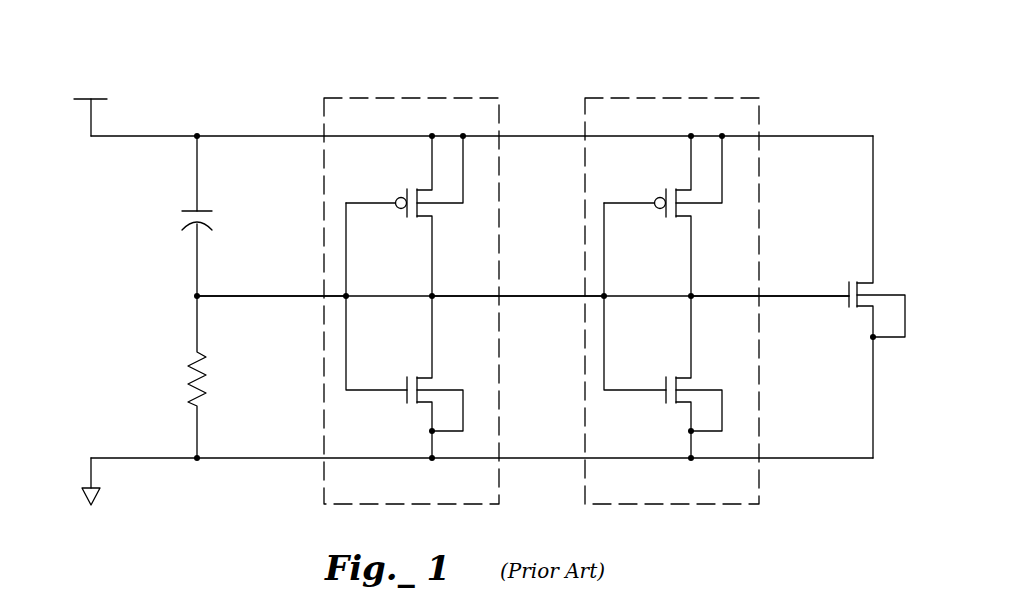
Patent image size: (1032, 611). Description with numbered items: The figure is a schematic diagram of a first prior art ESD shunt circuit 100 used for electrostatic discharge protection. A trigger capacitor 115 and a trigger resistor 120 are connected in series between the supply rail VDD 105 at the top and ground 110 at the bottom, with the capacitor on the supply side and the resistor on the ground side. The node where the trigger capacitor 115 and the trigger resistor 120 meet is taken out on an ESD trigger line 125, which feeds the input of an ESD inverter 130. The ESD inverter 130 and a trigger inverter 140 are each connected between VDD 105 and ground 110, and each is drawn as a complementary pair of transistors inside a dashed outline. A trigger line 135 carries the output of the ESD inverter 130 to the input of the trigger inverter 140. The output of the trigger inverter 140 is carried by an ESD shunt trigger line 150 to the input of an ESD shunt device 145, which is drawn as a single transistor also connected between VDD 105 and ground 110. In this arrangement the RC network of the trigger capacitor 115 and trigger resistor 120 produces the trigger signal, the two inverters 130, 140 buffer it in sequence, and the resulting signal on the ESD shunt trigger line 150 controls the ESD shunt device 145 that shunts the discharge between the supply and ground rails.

The first prior art ESD shunt circuit 100 is at (577, 49).
The VDD 105 is at (99, 99).
The ground 110 is at (90, 480).
The trigger capacitor 115 is at (213, 221).
The trigger resistor 120 is at (208, 374).
The ESD trigger line 125 is at (252, 295).
The ESD inverter 130 is at (473, 98).
The trigger line 135 is at (530, 295).
The trigger inverter 140 is at (733, 98).
The ESD shunt device 145 is at (846, 305).
The ESD shunt trigger line 150 is at (789, 295).